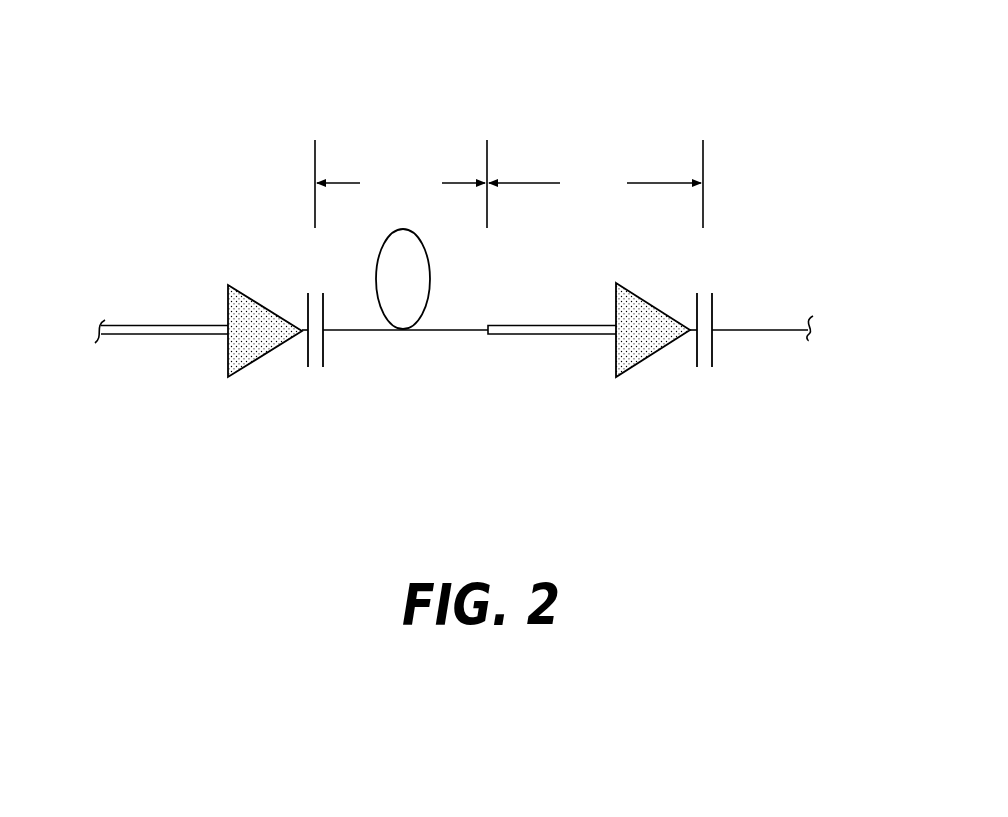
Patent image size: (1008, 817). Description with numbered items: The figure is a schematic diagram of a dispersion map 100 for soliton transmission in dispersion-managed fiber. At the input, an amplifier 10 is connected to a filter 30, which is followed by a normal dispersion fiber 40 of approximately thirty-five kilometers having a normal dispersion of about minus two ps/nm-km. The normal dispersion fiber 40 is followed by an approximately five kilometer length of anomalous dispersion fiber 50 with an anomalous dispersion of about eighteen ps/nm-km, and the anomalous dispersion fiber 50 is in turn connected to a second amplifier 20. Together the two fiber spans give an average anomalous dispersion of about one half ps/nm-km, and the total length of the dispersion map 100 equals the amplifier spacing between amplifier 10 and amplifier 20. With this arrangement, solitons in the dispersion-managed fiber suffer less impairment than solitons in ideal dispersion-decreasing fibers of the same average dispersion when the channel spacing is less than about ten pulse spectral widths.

The dispersion map 100 is at (486, 113).
The amplifier 10 is at (256, 296).
The amplifier 20 is at (656, 301).
The filter 30 is at (307, 374).
The normal dispersion fiber 40 is at (407, 335).
The anomalous dispersion fiber 50 is at (570, 338).